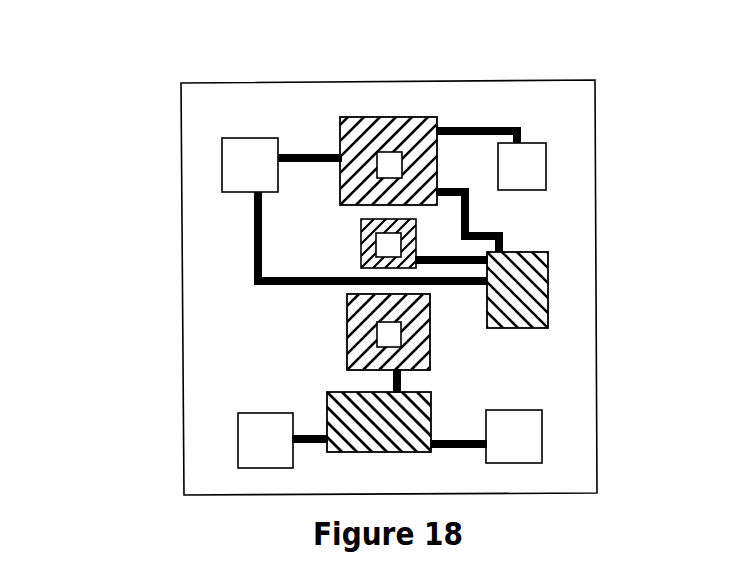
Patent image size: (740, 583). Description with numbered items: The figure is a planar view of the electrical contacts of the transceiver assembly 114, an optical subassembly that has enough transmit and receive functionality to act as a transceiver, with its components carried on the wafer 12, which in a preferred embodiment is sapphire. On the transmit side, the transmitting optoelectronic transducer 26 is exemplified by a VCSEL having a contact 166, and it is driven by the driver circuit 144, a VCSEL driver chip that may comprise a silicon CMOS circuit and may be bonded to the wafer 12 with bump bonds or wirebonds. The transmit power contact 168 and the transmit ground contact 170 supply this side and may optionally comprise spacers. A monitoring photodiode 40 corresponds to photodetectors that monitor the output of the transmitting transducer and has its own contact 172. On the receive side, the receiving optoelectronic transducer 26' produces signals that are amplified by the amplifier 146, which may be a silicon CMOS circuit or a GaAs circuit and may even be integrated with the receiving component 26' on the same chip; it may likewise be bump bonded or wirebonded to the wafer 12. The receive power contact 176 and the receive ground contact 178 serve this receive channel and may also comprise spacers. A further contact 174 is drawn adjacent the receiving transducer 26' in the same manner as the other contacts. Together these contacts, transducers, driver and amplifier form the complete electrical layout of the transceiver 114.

The wafer 12 is at (540, 382).
The transceiver assembly 114 is at (125, 182).
The transmit ground contact 170 is at (246, 165).
The monitoring photodiode 40 is at (422, 132).
The contact 172 is at (393, 165).
The transmit power contact 168 is at (530, 163).
The contact 166 is at (388, 243).
The transmitting optoelectronic transducer 26 is at (239, 252).
The contact window 174 is at (380, 342).
The receiving optoelectronic transducer 26' is at (238, 338).
The driver circuit 144 is at (545, 318).
The amplifier 146 is at (400, 453).
The receive ground contact 178 is at (257, 432).
The receive power contact 176 is at (518, 448).